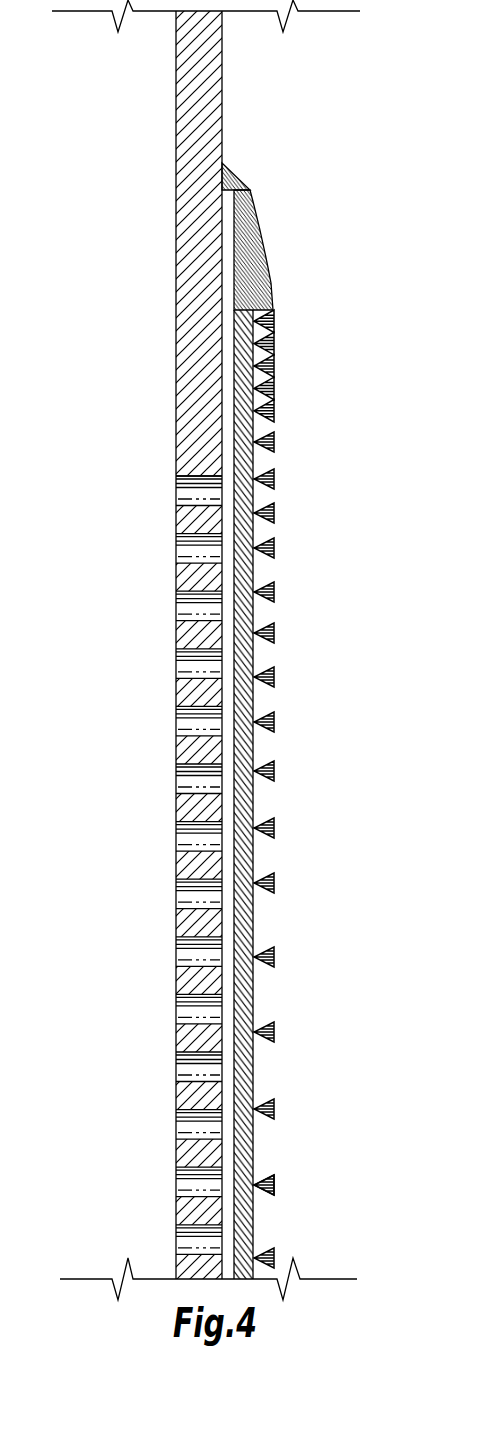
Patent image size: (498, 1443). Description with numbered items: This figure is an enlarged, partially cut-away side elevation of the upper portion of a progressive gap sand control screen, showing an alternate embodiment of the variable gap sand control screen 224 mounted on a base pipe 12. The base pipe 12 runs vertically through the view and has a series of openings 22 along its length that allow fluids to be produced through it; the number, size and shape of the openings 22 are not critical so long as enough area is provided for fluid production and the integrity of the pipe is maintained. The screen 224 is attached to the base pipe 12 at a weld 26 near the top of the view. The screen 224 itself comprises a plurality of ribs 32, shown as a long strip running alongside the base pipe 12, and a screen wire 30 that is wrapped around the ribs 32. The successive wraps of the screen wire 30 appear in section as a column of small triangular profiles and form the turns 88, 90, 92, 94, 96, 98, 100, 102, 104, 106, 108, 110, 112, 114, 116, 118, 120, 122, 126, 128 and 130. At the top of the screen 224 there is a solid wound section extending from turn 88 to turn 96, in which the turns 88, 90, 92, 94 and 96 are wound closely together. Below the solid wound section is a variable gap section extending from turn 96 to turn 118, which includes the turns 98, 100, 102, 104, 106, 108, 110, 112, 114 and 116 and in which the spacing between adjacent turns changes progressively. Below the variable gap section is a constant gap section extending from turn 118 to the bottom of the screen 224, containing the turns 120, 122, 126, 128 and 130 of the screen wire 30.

The base pipe 12 is at (222, 66).
The openings 22 is at (178, 495).
The weld 26 is at (233, 177).
The variable gap sand control screen 224 is at (272, 247).
The ribs 32 is at (254, 920).
The screen wire 30 is at (277, 1202).
The turn 88 is at (275, 321).
The turn 90 is at (275, 344).
The turn 92 is at (275, 366).
The turn 94 is at (275, 388).
The turn 96 is at (275, 411).
The turn 98 is at (275, 442).
The turn 100 is at (275, 479).
The turn 102 is at (275, 513).
The turn 104 is at (275, 548).
The turn 106 is at (275, 592).
The turn 108 is at (275, 633).
The turn 110 is at (275, 677).
The turn 112 is at (275, 722).
The turn 114 is at (275, 771).
The turn 116 is at (275, 828).
The turn 118 is at (275, 883).
The turn 120 is at (275, 957).
The turn 122 is at (275, 1032).
The turn 126 is at (275, 1109).
The turn 128 is at (275, 1185).
The turn 130 is at (275, 1258).